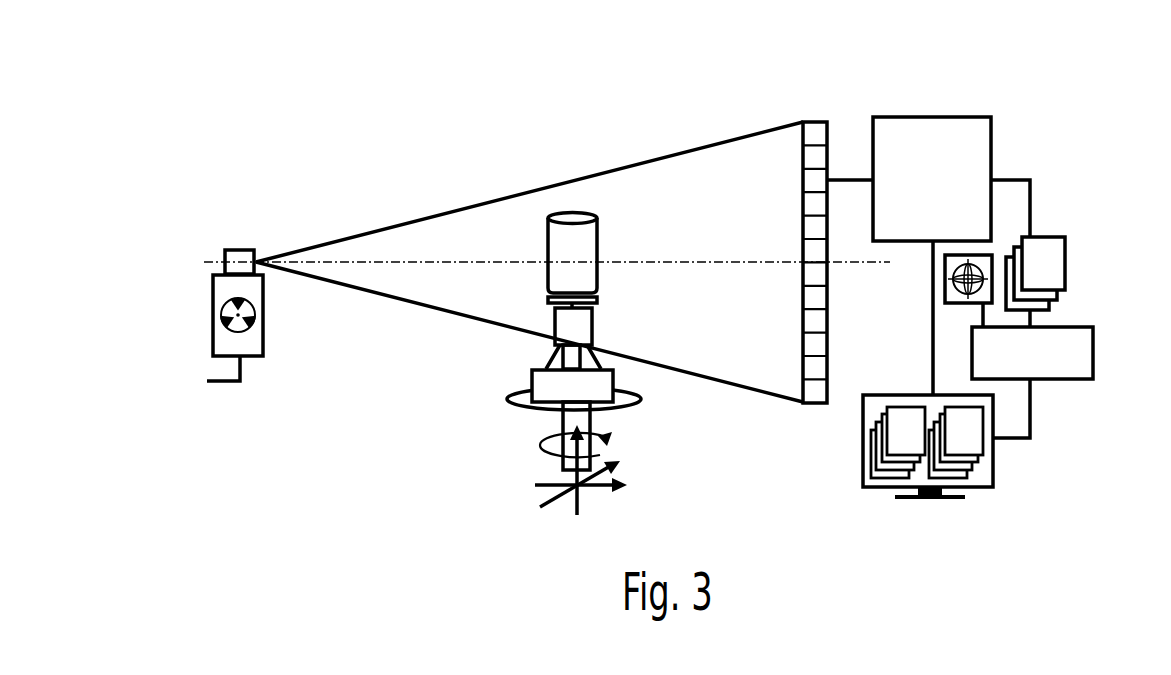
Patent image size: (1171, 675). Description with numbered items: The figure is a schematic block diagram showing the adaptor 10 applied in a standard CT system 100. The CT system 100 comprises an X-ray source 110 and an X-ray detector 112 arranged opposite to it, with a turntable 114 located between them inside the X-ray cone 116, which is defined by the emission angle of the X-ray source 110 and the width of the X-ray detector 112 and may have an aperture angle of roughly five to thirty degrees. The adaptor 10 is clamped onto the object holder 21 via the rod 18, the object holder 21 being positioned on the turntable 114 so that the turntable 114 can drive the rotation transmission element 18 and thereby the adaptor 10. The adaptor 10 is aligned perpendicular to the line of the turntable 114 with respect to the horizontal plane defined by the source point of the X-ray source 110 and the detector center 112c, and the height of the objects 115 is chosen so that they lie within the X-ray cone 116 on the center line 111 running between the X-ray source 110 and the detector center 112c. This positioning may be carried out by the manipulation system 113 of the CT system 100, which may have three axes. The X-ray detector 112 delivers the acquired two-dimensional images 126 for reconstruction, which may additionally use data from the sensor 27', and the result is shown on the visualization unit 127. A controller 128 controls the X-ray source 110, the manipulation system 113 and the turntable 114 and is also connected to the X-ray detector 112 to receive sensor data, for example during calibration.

The CT system 100 is at (812, 97).
The X-ray source 110 is at (238, 249).
The center line 111 is at (727, 260).
The X-ray detector 112 is at (815, 404).
The detector center 112c is at (800, 263).
The manipulation system 113 is at (550, 478).
The turntable 114 is at (520, 398).
The objects 115 is at (585, 243).
The X-ray cone 116 is at (481, 225).
The adaptor 10 is at (590, 325).
The rotation transmission element 18 is at (570, 353).
The object holder 21 is at (548, 356).
The 2D images 126 is at (1052, 236).
The visualization unit 127 is at (980, 471).
The controller 128 is at (953, 116).
The sensor 27' is at (923, 293).